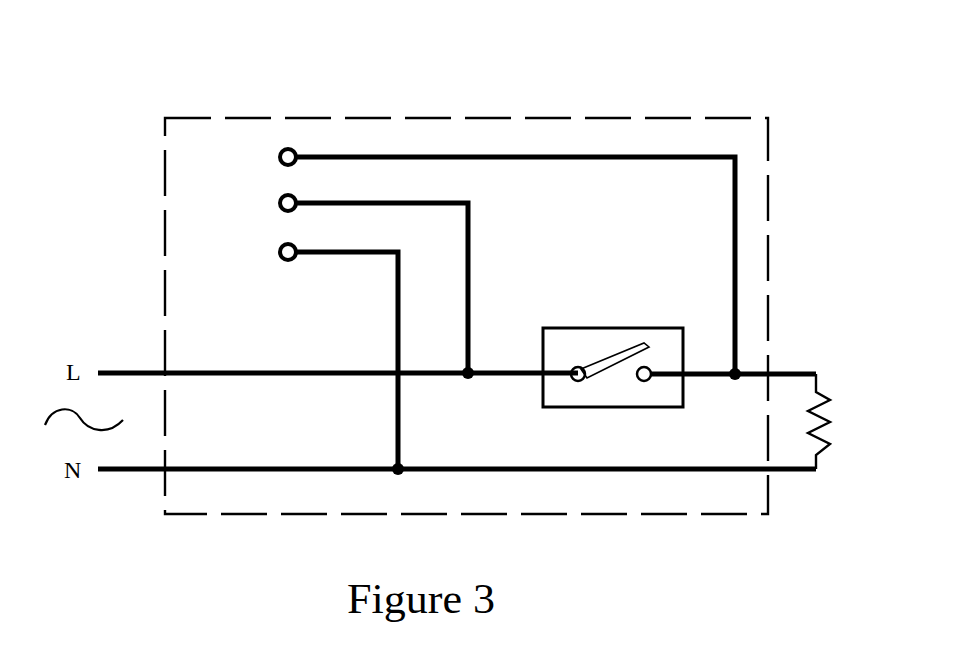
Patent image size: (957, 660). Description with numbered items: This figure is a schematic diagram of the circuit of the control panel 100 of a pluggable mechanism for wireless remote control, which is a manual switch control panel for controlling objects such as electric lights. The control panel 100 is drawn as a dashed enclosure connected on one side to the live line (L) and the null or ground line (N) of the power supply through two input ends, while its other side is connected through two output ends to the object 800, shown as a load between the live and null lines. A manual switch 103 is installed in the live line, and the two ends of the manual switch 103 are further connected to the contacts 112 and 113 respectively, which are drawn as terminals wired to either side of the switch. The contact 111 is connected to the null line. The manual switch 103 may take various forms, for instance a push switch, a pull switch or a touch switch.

The control panel 100 is at (645, 118).
The manual switch 103 is at (607, 328).
The contact 111 is at (315, 357).
The contact 112 is at (349, 285).
The contact 113 is at (482, 262).
The object 800 is at (833, 415).